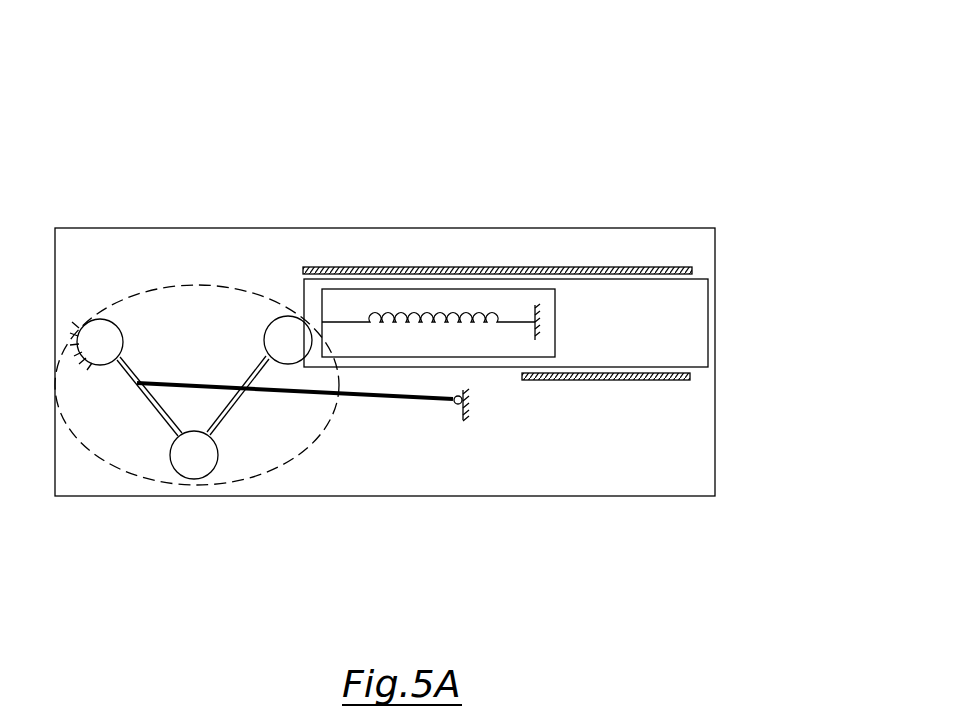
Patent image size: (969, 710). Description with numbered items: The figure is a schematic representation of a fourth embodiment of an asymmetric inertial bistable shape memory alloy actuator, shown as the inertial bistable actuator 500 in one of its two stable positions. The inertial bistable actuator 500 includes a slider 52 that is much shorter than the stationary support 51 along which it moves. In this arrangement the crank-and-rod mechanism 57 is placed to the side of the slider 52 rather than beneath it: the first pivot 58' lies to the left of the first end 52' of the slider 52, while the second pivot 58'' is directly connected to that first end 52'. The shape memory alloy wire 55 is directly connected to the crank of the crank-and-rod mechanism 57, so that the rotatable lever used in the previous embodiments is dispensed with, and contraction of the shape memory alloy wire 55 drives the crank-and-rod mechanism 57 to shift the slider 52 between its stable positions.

The inertial bistable actuator 500 is at (170, 190).
The stationary support 51 is at (643, 468).
The slider 52 is at (505, 243).
The first end 52' is at (392, 233).
The shape memory alloy wire 55 is at (422, 400).
The crank-and-rod mechanism 57 is at (118, 468).
The first pivot 58' is at (73, 259).
The second pivot 58'' is at (283, 440).